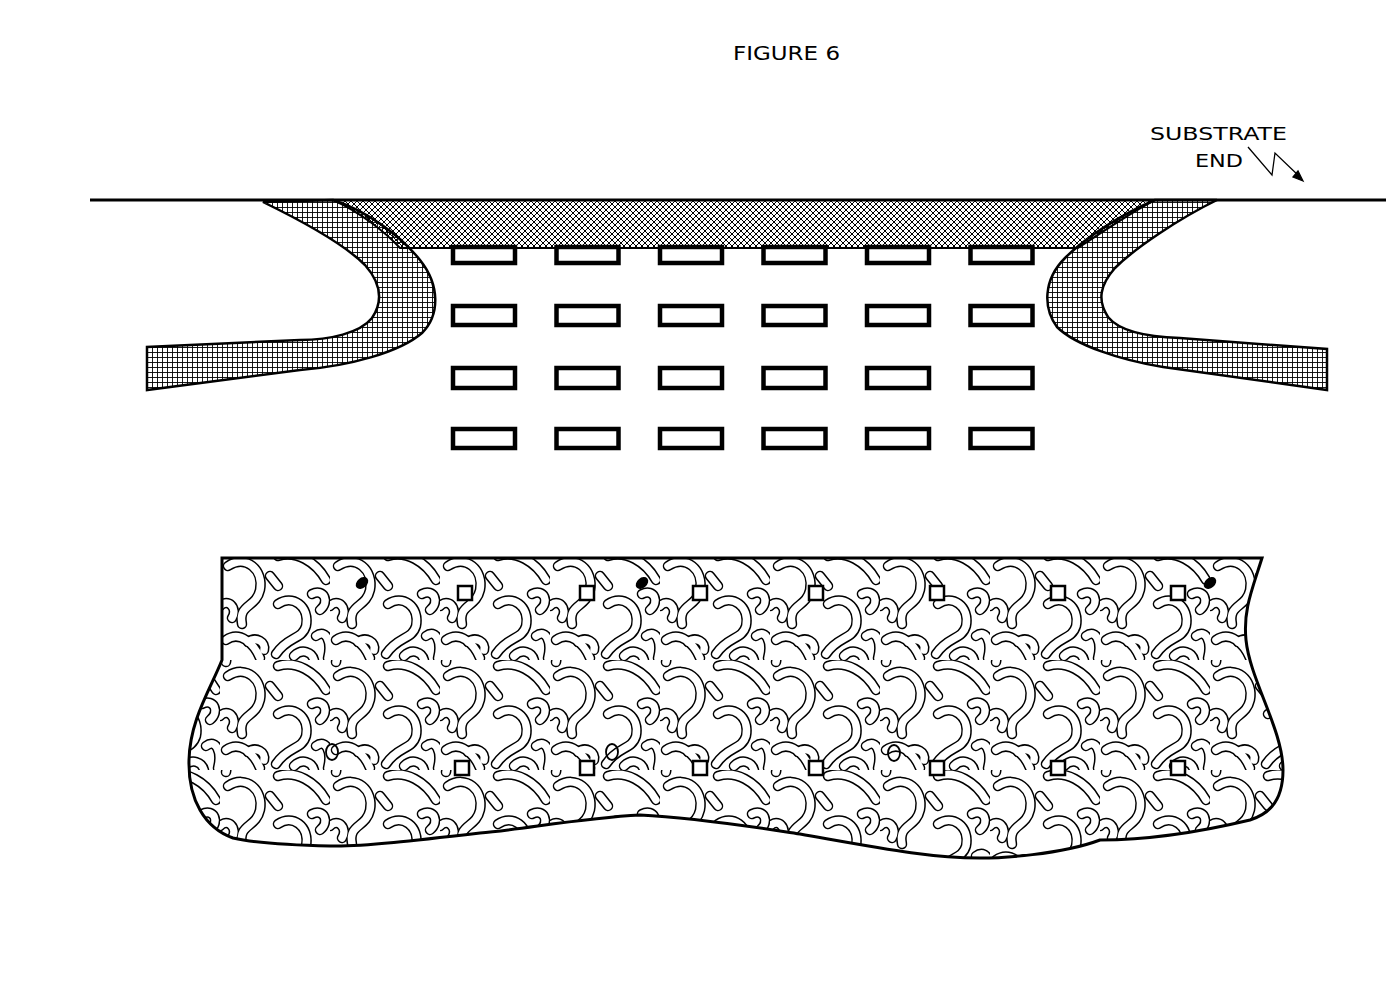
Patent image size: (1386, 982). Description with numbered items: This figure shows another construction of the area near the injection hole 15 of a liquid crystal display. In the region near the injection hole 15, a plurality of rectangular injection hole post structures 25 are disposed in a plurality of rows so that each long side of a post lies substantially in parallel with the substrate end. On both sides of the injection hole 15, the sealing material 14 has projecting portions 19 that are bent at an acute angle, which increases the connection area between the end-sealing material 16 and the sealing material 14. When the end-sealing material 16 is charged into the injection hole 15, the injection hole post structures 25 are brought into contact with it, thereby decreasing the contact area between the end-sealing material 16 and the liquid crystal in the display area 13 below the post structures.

The display area 13 is at (1005, 557).
The sealing material 14 is at (262, 381).
The injection hole 15 is at (888, 157).
The end-sealing material 16 is at (698, 196).
The projecting portion 19 is at (268, 233).
The injection hole post structure 25 is at (453, 440).